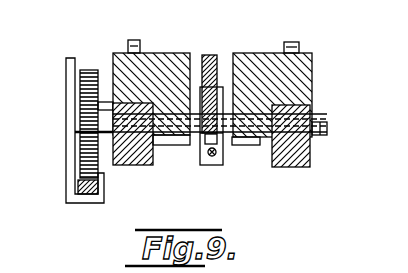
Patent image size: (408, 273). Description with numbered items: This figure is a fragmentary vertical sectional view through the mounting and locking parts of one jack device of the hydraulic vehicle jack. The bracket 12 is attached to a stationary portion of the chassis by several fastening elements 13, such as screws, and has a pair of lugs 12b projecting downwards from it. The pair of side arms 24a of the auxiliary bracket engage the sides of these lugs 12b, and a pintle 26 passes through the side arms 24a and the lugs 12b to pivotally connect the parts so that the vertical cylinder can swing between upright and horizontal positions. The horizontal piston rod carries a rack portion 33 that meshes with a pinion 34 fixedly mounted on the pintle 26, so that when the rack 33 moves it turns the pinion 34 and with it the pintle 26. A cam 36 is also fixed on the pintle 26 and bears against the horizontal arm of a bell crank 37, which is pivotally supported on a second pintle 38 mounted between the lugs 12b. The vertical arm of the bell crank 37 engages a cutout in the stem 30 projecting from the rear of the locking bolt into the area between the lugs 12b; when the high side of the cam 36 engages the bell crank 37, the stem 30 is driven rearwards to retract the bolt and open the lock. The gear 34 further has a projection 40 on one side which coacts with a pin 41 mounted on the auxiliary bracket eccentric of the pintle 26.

The bracket 12 is at (247, 58).
The lugs 12b is at (175, 148).
The fastening elements 13 is at (134, 40).
The side arms 24a is at (123, 166).
The pintle 26 is at (322, 136).
The stem 30 is at (198, 88).
The rack portion 33 is at (80, 188).
The pinion 34 is at (88, 70).
The cam 36 is at (218, 158).
The bell crank 37 is at (207, 55).
The pintle 38 is at (197, 150).
The projection 40 is at (75, 98).
The pin 41 is at (90, 115).